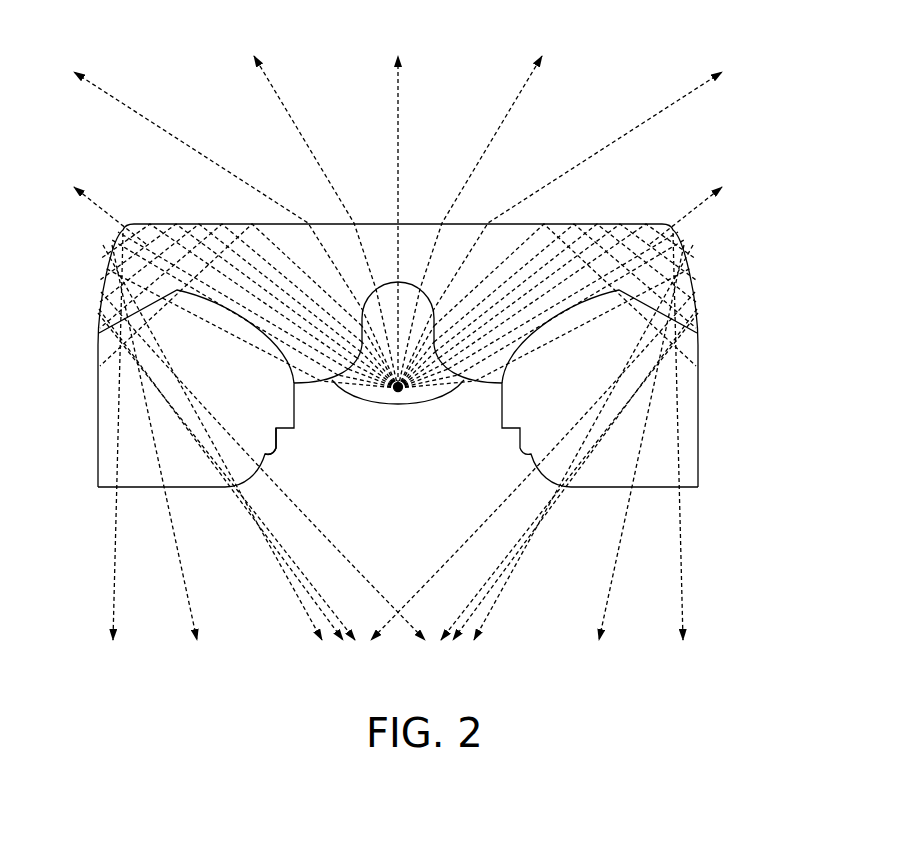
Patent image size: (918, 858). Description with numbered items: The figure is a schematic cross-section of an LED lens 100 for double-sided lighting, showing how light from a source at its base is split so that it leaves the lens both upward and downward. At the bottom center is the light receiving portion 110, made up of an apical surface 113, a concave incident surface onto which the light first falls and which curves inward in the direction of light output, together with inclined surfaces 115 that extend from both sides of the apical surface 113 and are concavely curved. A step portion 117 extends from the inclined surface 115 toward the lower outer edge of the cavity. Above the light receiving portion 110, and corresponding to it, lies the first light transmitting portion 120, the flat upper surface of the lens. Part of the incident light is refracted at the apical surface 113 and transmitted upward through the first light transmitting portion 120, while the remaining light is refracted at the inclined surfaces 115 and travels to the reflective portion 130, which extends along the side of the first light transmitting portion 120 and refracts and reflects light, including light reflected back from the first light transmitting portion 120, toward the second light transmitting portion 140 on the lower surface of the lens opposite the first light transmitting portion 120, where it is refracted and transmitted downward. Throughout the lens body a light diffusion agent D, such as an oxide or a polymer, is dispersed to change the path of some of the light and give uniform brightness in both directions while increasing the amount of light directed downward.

The LED lens for double-sided lighting 100 is at (648, 206).
The light receiving portion 110 is at (353, 307).
The apical surface 113 is at (405, 281).
The inclined surfaces 115 is at (398, 404).
The step portion 117 is at (279, 438).
The first light transmitting portion 120 is at (370, 223).
The reflective portion 130 is at (698, 388).
The second light transmitting portion 140 is at (148, 489).
The light diffusion agent D is at (632, 342).